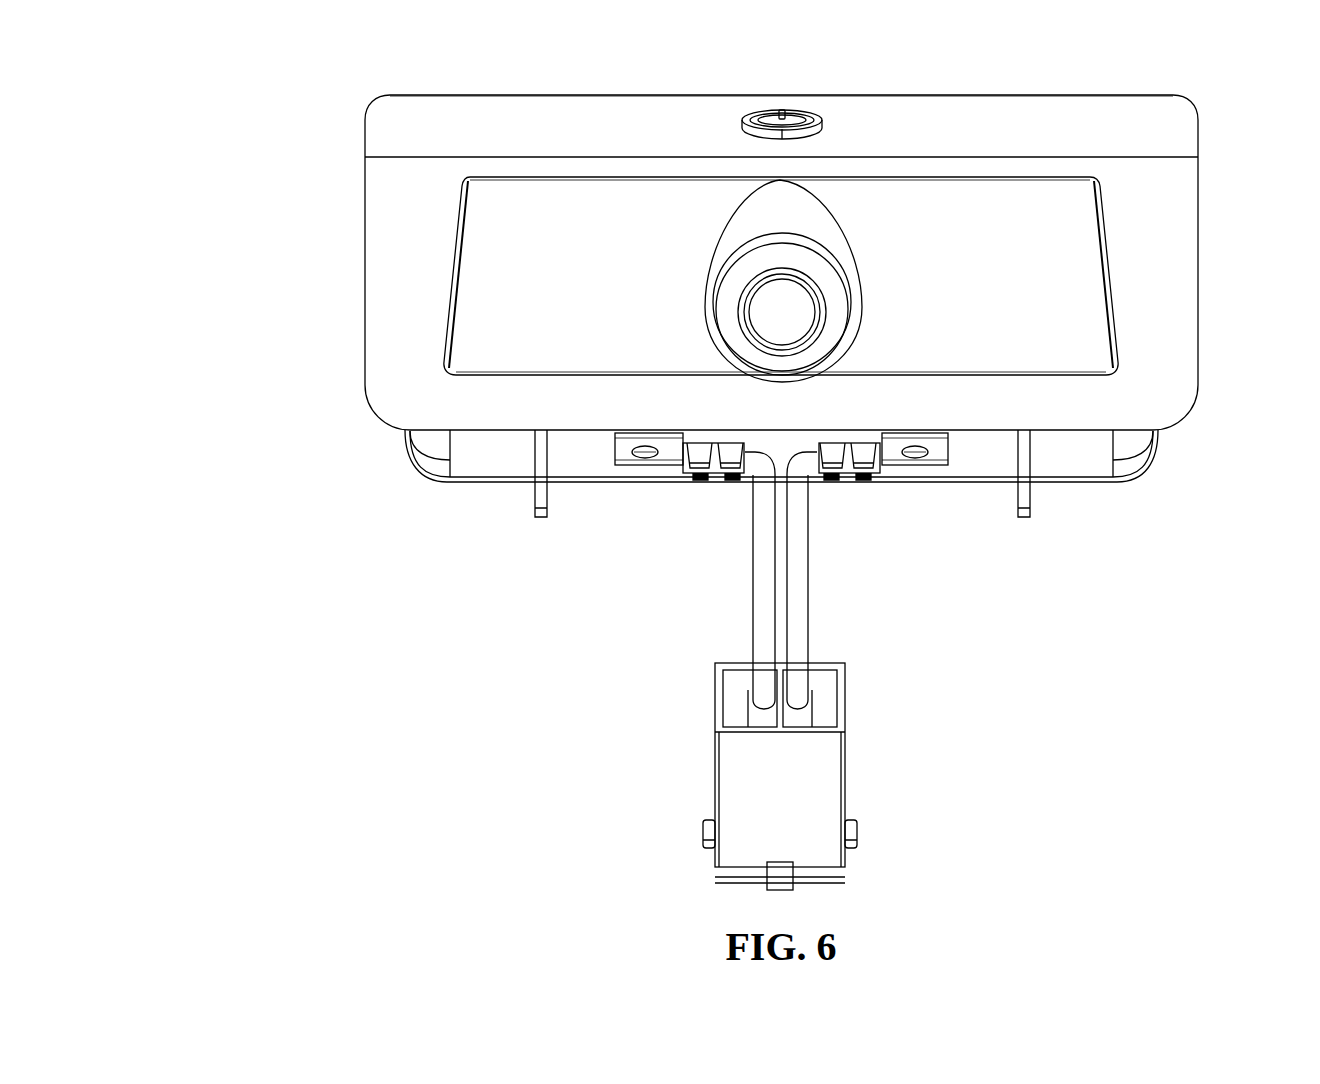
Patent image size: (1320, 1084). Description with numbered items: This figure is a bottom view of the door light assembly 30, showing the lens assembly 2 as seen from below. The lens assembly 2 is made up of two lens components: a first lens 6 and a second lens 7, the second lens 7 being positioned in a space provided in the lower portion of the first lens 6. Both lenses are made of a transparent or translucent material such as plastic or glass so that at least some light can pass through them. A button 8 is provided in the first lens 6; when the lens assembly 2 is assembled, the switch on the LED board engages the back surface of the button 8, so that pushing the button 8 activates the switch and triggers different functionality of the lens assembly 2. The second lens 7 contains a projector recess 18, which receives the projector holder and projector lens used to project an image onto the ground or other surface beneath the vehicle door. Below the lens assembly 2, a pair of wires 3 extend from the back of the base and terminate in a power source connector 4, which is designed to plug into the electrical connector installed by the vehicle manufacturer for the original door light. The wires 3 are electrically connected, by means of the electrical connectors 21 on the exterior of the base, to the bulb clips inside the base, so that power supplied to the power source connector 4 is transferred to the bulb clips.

The door light assembly 30 is at (226, 141).
The lens assembly 2 is at (990, 107).
The first lens 6 is at (556, 133).
The second lens 7 is at (1082, 291).
The button 8 is at (745, 128).
The projector recess 18 is at (808, 205).
The electrical connectors 21 is at (633, 460).
The wires 3 is at (798, 560).
The power source connector 4 is at (740, 773).